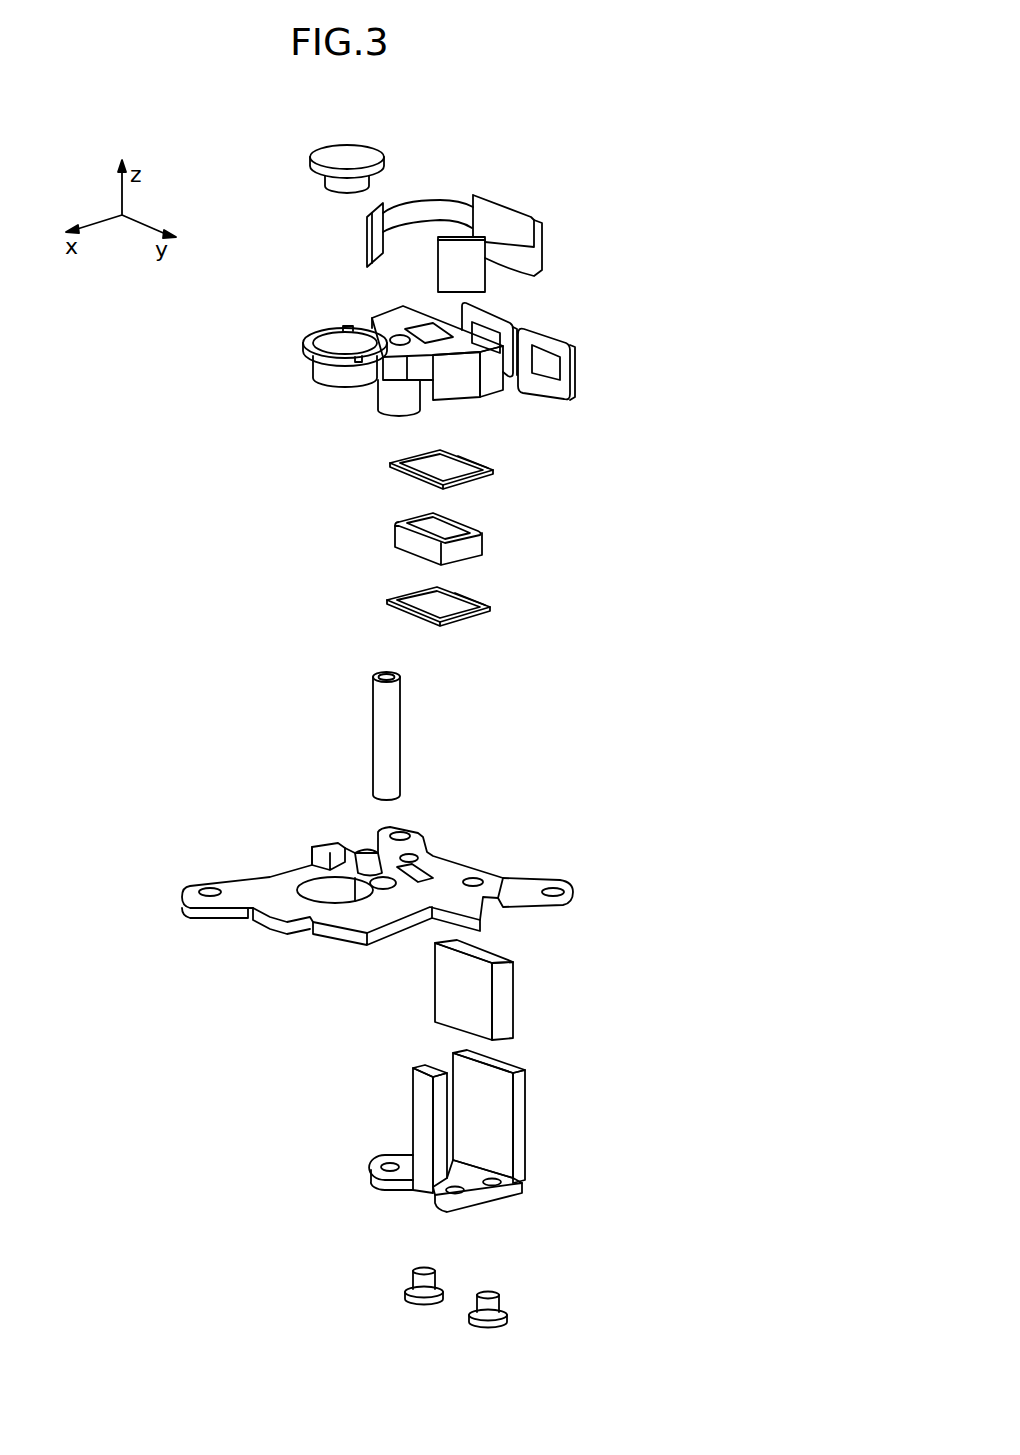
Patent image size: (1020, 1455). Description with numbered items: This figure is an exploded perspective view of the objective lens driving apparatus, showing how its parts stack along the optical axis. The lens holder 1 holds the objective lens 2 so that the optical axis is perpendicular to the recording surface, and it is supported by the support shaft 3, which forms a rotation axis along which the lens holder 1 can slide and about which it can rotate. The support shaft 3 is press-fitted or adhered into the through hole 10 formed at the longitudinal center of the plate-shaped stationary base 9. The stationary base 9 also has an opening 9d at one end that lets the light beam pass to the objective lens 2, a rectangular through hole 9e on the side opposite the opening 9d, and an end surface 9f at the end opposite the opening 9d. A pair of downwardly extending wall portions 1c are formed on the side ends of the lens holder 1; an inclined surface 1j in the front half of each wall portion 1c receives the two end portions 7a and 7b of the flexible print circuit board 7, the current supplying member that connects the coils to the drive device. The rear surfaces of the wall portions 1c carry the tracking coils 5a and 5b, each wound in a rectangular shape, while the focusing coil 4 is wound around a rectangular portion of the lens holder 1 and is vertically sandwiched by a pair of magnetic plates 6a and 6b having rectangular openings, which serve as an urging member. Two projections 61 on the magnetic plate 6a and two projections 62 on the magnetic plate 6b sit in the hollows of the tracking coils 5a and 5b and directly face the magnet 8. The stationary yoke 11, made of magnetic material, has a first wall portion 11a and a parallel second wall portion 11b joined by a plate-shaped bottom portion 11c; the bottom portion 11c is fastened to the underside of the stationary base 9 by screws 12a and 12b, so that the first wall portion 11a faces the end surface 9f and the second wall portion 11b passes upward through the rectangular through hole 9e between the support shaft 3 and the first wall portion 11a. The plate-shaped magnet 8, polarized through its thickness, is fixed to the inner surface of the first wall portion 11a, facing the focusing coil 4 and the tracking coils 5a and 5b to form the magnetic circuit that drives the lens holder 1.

The lens holder 1 is at (406, 376).
The wall portions 1c is at (493, 381).
The inclined surface 1j is at (453, 392).
The objective lens 2 is at (333, 158).
The support shaft 3 is at (375, 727).
The focusing coil 4 is at (485, 540).
The tracking coil 5a is at (475, 312).
The tracking coil 5b is at (575, 369).
The magnetic plate 6a is at (495, 452).
The magnetic plate 6b is at (494, 593).
The projections 61 is at (487, 467).
The projections 62 is at (490, 606).
The flexible print circuit board 7 is at (506, 218).
The end portion 7a is at (377, 248).
The end portion 7b is at (457, 262).
The magnet 8 is at (507, 997).
The stationary base 9 is at (377, 895).
The opening 9d is at (305, 888).
The rectangular through hole 9e is at (428, 867).
The end surface 9f is at (498, 877).
The through hole 10 is at (368, 857).
The stationary yoke 11 is at (459, 1144).
The first wall portion 11a is at (465, 1098).
The second wall portion 11b is at (420, 1133).
The bottom portion 11c is at (495, 1200).
The screw 12a is at (405, 1296).
The screw 12b is at (510, 1318).